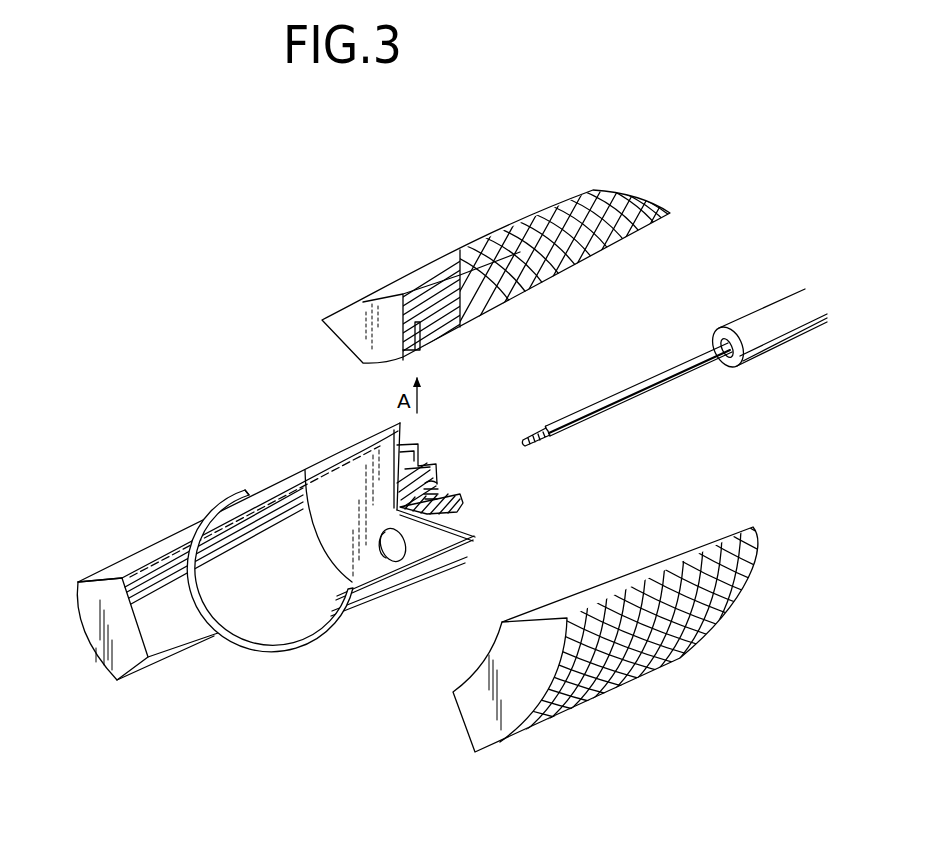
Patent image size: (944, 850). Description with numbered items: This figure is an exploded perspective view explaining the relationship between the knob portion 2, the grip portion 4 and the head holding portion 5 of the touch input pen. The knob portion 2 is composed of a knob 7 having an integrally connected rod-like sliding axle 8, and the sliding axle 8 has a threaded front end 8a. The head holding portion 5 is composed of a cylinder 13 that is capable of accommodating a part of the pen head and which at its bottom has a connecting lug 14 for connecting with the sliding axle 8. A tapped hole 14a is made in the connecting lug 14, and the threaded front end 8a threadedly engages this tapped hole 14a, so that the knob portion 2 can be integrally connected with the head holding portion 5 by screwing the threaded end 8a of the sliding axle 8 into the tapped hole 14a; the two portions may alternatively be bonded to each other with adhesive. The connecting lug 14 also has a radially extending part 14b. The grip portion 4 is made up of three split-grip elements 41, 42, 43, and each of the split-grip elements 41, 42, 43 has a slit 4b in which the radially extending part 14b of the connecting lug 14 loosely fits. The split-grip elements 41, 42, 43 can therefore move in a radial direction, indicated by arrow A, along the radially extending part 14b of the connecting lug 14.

The knob portion 2 is at (671, 399).
The grip portion 4 is at (563, 274).
The split-grip element 41 is at (618, 212).
The slit 4b is at (420, 353).
The head holding portion 5 is at (286, 534).
The split-grip element 43 is at (95, 615).
The cylinder 13 is at (367, 607).
The connecting lug 14 is at (463, 507).
The tapped hole 14a is at (438, 487).
The radially extending part 14b is at (420, 450).
The knob 7 is at (767, 339).
The sliding axle 8 is at (624, 397).
The threaded front end 8a is at (535, 428).
The split-grip element 42 is at (640, 667).